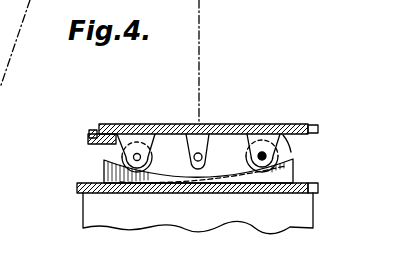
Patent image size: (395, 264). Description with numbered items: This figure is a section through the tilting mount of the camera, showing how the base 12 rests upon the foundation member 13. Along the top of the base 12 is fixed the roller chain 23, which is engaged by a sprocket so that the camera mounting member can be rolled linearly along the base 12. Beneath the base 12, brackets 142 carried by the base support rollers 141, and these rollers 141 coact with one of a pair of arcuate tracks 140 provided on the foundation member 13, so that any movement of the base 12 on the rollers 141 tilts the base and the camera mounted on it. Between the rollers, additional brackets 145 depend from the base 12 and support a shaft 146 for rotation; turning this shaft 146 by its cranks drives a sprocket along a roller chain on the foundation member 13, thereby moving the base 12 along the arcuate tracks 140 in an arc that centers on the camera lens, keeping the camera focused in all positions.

The base 12 is at (235, 124).
The foundation member 13 is at (77, 189).
The roller chain 23 is at (94, 129).
The arcuate tracks 140 is at (164, 178).
The rollers 141 is at (168, 124).
The brackets 142 is at (137, 124).
The additional brackets 145 is at (213, 124).
The shaft 146 is at (204, 157).